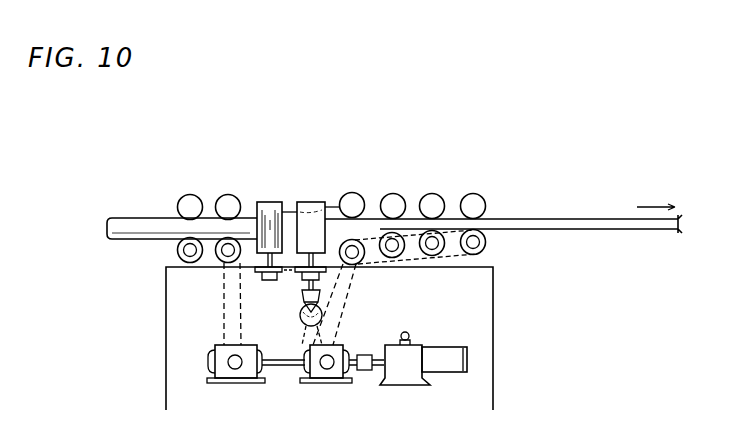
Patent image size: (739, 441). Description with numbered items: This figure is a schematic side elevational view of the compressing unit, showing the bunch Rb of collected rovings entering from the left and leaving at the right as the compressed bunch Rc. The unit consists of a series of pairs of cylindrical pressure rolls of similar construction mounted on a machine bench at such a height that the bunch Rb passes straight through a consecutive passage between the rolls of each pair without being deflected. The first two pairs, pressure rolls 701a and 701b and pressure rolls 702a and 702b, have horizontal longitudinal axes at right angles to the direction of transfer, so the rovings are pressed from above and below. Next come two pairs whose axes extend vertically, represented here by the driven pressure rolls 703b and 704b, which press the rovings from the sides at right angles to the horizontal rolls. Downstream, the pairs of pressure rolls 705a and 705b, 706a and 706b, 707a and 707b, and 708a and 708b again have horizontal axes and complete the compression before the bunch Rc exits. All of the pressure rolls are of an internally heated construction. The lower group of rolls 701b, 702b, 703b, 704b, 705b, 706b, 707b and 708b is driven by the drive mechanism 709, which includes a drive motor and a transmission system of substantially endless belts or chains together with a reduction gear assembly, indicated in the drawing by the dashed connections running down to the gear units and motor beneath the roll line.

The bunch of collected rovings Rb is at (125, 218).
The compressed bunch of rovings Rc is at (583, 218).
The cylindrical pressure roll 701a is at (180, 198).
The cylindrical pressure roll 701b is at (177, 250).
The cylindrical pressure roll 702a is at (226, 194).
The cylindrical pressure roll 702b is at (220, 255).
The cylindrical pressure roll 703b is at (266, 202).
The cylindrical pressure roll 704b is at (305, 202).
The cylindrical pressure roll 705a is at (350, 192).
The cylindrical pressure roll 705b is at (365, 262).
The cylindrical pressure roll 706a is at (394, 193).
The cylindrical pressure roll 706b is at (398, 256).
The cylindrical pressure roll 707a is at (432, 193).
The cylindrical pressure roll 707b is at (440, 254).
The cylindrical pressure roll 708a is at (475, 193).
The cylindrical pressure roll 708b is at (485, 245).
The drive mechanism 709 is at (403, 384).